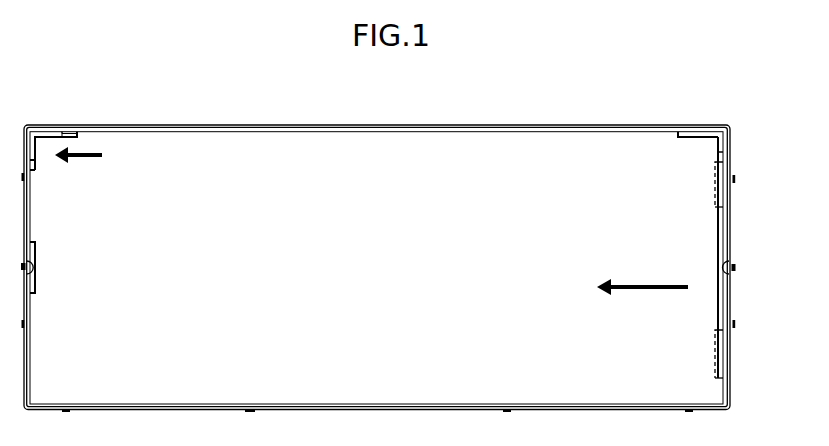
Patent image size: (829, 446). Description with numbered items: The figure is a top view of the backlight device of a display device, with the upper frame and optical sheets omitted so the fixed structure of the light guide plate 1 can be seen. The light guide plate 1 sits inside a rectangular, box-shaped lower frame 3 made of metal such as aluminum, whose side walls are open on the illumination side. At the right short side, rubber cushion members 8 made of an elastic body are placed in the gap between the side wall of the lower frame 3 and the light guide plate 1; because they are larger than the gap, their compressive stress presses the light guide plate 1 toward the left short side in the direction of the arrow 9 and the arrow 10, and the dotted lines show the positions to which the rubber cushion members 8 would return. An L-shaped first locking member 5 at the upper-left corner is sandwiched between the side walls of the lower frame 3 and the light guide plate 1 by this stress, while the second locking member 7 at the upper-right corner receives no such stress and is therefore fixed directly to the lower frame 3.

The light guide plate 1 is at (540, 165).
The lower frame 3 is at (725, 297).
The first locking member 5 is at (47, 133).
The second locking member 7 is at (703, 134).
The rubber cushion member 8 is at (725, 183).
The arrow 9 is at (645, 283).
The arrow 10 is at (85, 153).